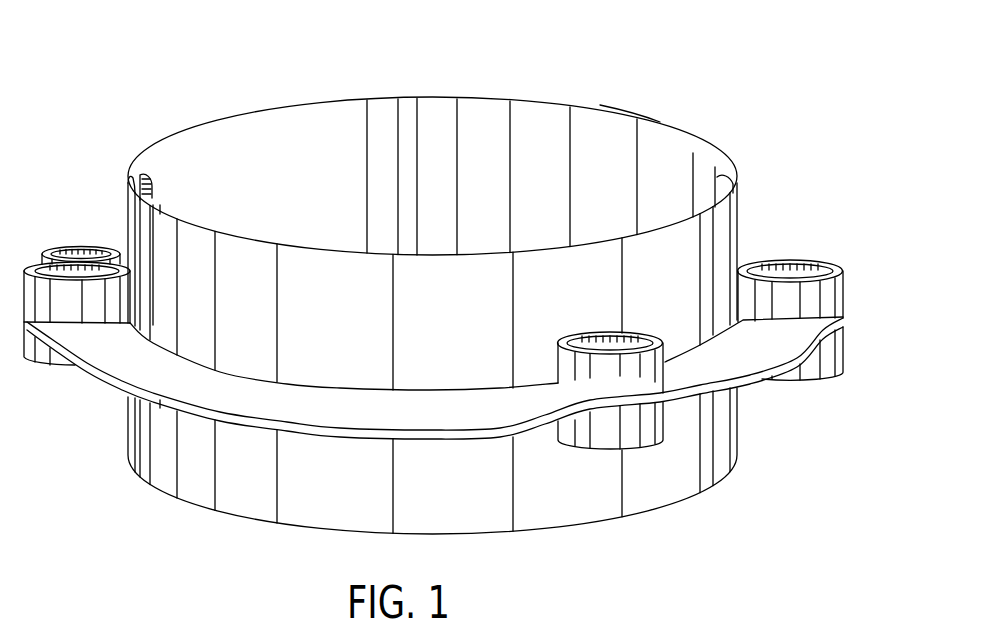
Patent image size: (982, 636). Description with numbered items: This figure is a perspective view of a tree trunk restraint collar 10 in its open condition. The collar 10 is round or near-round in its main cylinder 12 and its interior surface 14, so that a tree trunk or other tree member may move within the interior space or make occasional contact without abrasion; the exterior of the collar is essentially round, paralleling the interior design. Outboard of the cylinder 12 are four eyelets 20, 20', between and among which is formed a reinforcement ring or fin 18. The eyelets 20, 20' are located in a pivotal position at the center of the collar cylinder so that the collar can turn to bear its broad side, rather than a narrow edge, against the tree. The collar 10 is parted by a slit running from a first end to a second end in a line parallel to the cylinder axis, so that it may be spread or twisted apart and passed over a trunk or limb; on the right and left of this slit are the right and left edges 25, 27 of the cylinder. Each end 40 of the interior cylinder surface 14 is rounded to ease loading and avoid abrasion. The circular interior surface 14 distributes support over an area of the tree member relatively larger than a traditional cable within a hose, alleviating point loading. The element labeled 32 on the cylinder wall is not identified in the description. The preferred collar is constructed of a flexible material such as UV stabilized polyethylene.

The collar 10 is at (186, 88).
The main cylinder 12 is at (431, 535).
The interior surface 14 is at (251, 217).
The reinforcement ring or fin 18 is at (100, 352).
The eyelet 20 is at (441, 358).
The eyelet 20' is at (76, 225).
The right edge 25 is at (158, 219).
The left edge 27 is at (146, 180).
The outer wall 32 is at (341, 327).
The end of the interior cylinder surface 40 is at (632, 128).